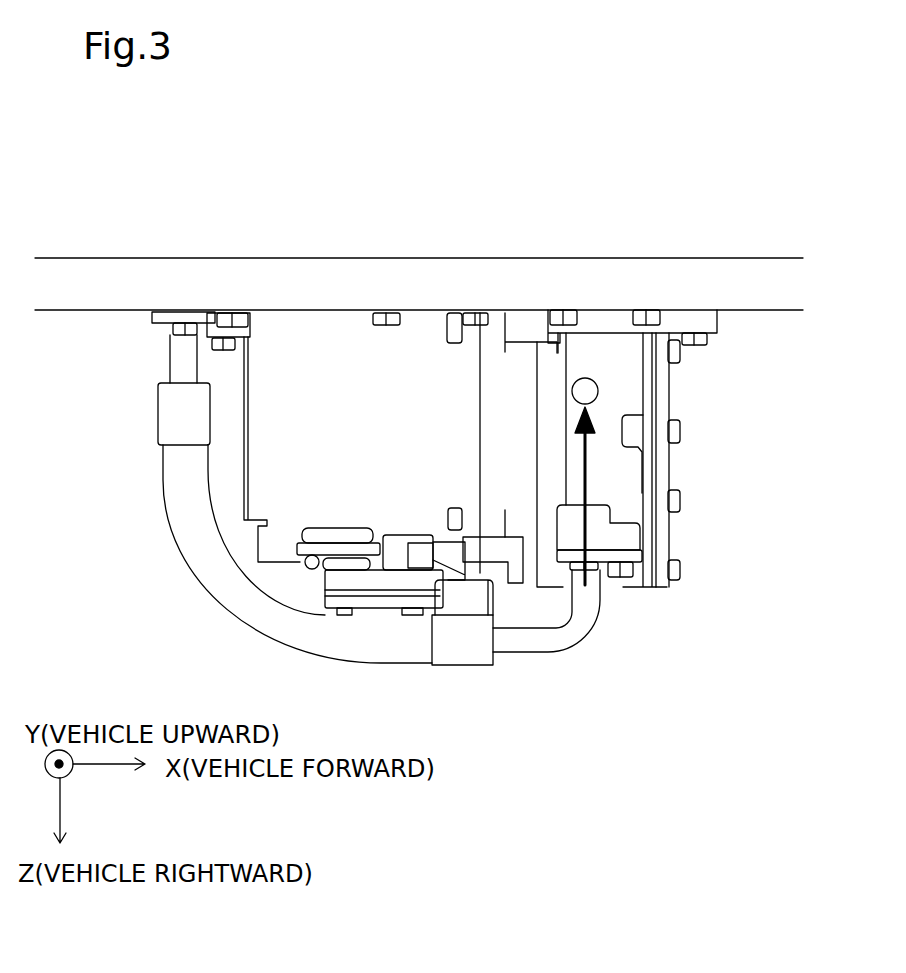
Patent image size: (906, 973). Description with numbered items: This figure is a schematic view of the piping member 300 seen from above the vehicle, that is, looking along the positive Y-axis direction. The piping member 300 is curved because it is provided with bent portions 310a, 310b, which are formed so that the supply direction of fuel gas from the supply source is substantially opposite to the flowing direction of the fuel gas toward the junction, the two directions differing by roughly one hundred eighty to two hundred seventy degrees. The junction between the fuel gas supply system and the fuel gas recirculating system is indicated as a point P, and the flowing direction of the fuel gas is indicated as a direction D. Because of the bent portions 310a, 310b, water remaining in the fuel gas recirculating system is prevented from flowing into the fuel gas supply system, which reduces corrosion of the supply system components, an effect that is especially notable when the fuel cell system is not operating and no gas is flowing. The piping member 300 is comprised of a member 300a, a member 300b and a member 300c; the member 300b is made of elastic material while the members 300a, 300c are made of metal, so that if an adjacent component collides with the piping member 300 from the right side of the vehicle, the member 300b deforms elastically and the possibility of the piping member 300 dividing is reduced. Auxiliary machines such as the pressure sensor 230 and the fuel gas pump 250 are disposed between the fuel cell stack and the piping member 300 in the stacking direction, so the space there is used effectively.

The pressure sensor 230 is at (735, 288).
The fuel gas pump 250 is at (690, 395).
The piping member 300 is at (642, 618).
The member 300a is at (170, 358).
The member 300b is at (253, 554).
The member 300c is at (554, 646).
The bent portion 310a is at (229, 630).
The bent portion 310b is at (598, 642).
The point P is at (597, 377).
The direction D is at (585, 482).